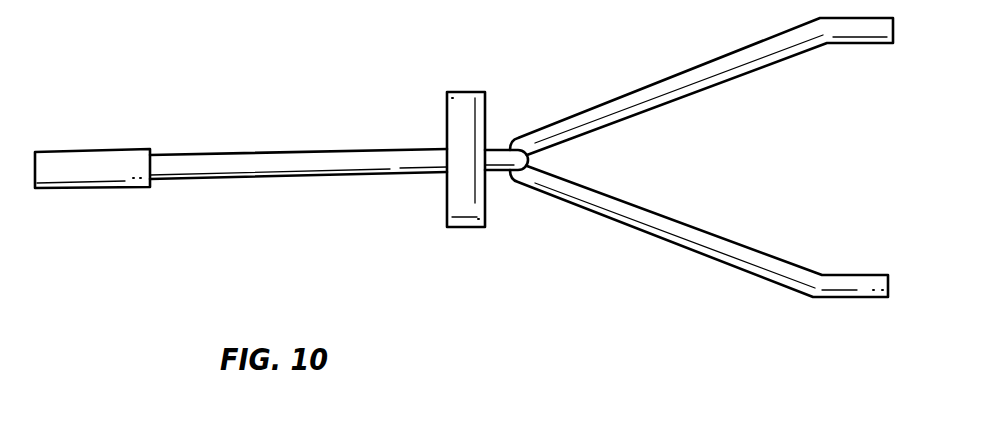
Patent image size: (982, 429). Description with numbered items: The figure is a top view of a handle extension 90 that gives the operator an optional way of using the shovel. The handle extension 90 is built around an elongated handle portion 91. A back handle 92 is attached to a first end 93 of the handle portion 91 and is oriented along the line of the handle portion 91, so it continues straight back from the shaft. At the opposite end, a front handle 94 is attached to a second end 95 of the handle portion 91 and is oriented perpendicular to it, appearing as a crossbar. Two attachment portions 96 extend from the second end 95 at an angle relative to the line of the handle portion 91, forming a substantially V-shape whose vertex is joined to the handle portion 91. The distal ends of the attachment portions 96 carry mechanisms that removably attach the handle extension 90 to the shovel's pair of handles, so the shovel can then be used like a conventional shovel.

The handle extension 90 is at (356, 78).
The handle portion 91 is at (287, 165).
The back handle 92 is at (120, 178).
The first end 93 is at (76, 137).
The front handle 94 is at (465, 118).
The second end 95 is at (497, 225).
The attachment portions 96 is at (715, 80).